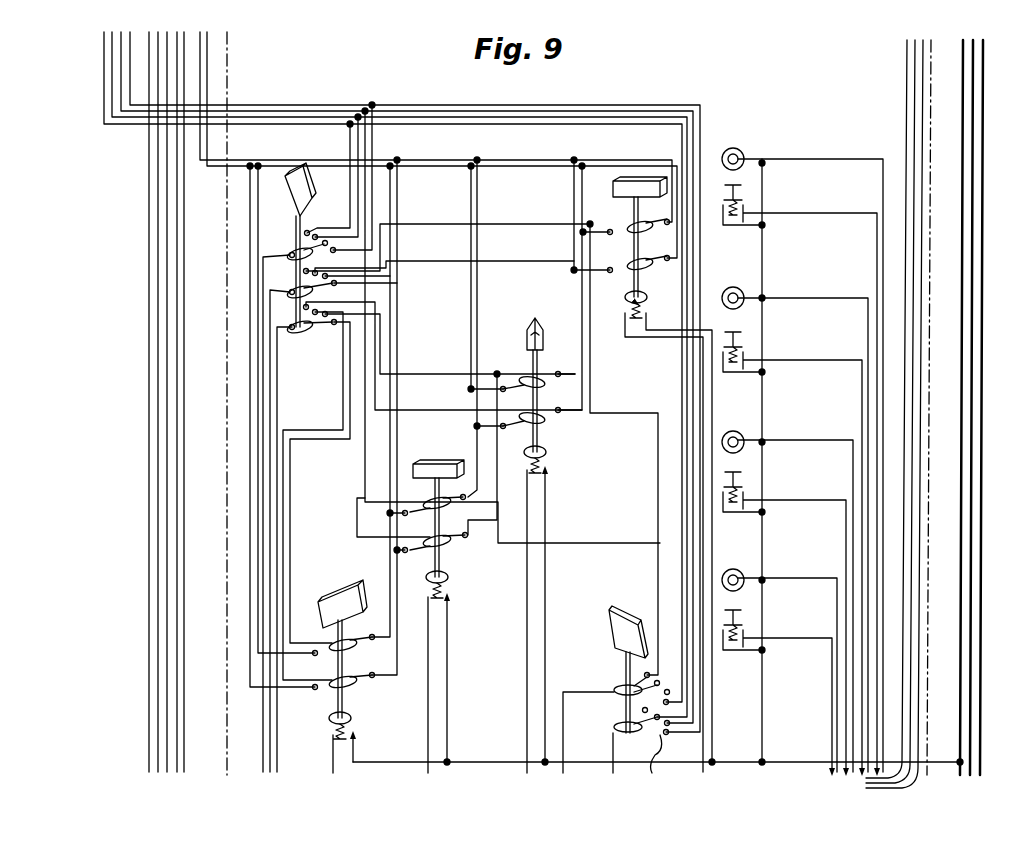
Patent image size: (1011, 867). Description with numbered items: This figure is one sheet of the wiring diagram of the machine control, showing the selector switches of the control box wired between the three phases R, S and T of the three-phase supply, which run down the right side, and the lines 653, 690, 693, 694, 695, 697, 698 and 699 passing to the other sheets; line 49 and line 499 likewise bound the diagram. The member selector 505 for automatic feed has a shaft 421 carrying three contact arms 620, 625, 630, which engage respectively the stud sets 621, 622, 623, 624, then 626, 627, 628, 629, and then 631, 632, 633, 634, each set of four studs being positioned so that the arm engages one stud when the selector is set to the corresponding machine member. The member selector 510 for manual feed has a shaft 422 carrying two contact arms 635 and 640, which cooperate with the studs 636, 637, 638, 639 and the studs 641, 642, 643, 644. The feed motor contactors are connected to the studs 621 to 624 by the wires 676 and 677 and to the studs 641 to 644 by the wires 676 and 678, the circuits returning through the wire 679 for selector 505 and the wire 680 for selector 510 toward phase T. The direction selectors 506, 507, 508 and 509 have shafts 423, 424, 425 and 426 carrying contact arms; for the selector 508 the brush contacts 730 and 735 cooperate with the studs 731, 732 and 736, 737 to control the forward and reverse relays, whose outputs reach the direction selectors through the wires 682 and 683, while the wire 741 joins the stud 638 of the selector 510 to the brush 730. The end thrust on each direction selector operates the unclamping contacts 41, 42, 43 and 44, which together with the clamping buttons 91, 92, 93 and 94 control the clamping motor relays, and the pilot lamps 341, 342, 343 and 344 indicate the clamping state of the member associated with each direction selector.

The unclamping contact 41 is at (642, 313).
The unclamping contact 42 is at (545, 472).
The unclamping contact 43 is at (452, 603).
The unclamping contact 44 is at (358, 739).
The panel boundary line 49 is at (935, 374).
The clamping button 91 is at (800, 476).
The clamping button 92 is at (792, 549).
The clamping button 93 is at (784, 619).
The clamping button 94 is at (777, 688).
The pilot lamp 341 is at (802, 453).
The pilot lamp 342 is at (795, 523).
The pilot lamp 343 is at (787, 595).
The pilot lamp 344 is at (779, 663).
The shaft 421 is at (295, 222).
The shaft 422 is at (627, 656).
The shaft 423 is at (633, 212).
The shaft 424 is at (540, 438).
The shaft 425 is at (440, 530).
The shaft 426 is at (348, 701).
The boundary line 499 is at (226, 486).
The member selecting switch 505 is at (306, 196).
The direction selecting switch 506 is at (638, 178).
The direction selecting switch 507 is at (540, 322).
The direction selecting switch 508 is at (432, 460).
The direction selecting switch 509 is at (340, 600).
The member selecting switch 510 is at (622, 613).
The contact arm 620 is at (288, 255).
The contact stud 621 is at (310, 228).
The contact stud 622 is at (317, 236).
The contact stud 623 is at (330, 242).
The contact stud 624 is at (338, 250).
The contact arm 625 is at (288, 292).
The contact stud 626 is at (303, 272).
The contact stud 627 is at (330, 273).
The contact stud 628 is at (386, 274).
The contact stud 629 is at (334, 286).
The contact arm 630 is at (288, 327).
The contact stud 631 is at (304, 333).
The contact stud 632 is at (435, 343).
The contact stud 633 is at (318, 316).
The contact stud 634 is at (340, 322).
The contact arm 635 is at (620, 687).
The contact stud 636 is at (634, 673).
The contact stud 637 is at (622, 698).
The contact stud 638 is at (660, 685).
The contact stud 639 is at (642, 713).
The contact arm 640 is at (618, 732).
The contact stud 641 is at (646, 731).
The contact stud 642 is at (656, 759).
The contact stud 643 is at (670, 723).
The contact stud 644 is at (666, 736).
The conductors 653 is at (920, 108).
The wire 676 is at (128, 104).
The wire 677 is at (370, 147).
The wire 678 is at (434, 124).
The wire 679 is at (258, 424).
The wire 680 is at (610, 771).
The wire 682 is at (210, 62).
The wire 683 is at (208, 36).
The conductor 690 is at (196, 28).
The conductor 693 is at (266, 383).
The conductor 694 is at (363, 461).
The conductor 695 is at (147, 32).
The conductor 697 is at (280, 412).
The conductor 698 is at (356, 515).
The conductor 699 is at (180, 22).
The brush contact 730 is at (437, 505).
The contact stud 731 is at (402, 516).
The contact stud 732 is at (468, 492).
The brush contact 735 is at (443, 543).
The contact stud 736 is at (406, 554).
The contact stud 737 is at (470, 528).
The wire 741 is at (590, 509).
The phase R is at (984, 160).
The phase S is at (974, 200).
The phase T is at (964, 248).